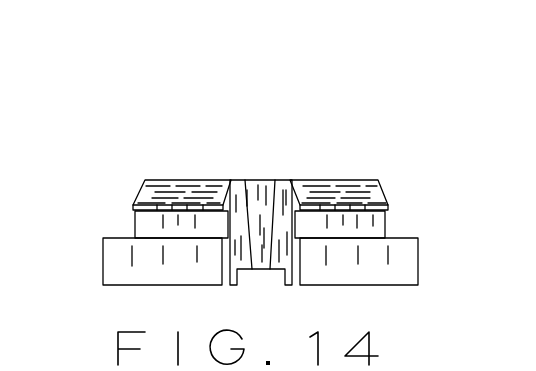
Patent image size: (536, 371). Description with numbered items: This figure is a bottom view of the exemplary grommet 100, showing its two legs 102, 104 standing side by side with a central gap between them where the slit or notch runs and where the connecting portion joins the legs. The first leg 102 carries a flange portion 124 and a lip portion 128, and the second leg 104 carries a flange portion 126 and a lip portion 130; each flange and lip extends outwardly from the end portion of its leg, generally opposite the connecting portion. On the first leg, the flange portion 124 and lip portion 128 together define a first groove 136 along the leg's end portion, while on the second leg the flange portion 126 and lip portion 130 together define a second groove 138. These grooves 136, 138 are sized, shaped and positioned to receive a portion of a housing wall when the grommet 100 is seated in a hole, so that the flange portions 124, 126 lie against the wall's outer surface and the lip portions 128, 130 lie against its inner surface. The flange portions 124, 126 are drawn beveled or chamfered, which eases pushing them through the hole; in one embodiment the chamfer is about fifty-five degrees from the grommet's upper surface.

The grommet 100 is at (333, 128).
The first leg 102 is at (162, 180).
The second leg 104 is at (325, 180).
The flange portion 124 is at (140, 190).
The flange portion 126 is at (382, 180).
The lip portion 128 is at (160, 236).
The lip portion 130 is at (352, 235).
The first groove 136 is at (136, 228).
The second groove 138 is at (377, 225).